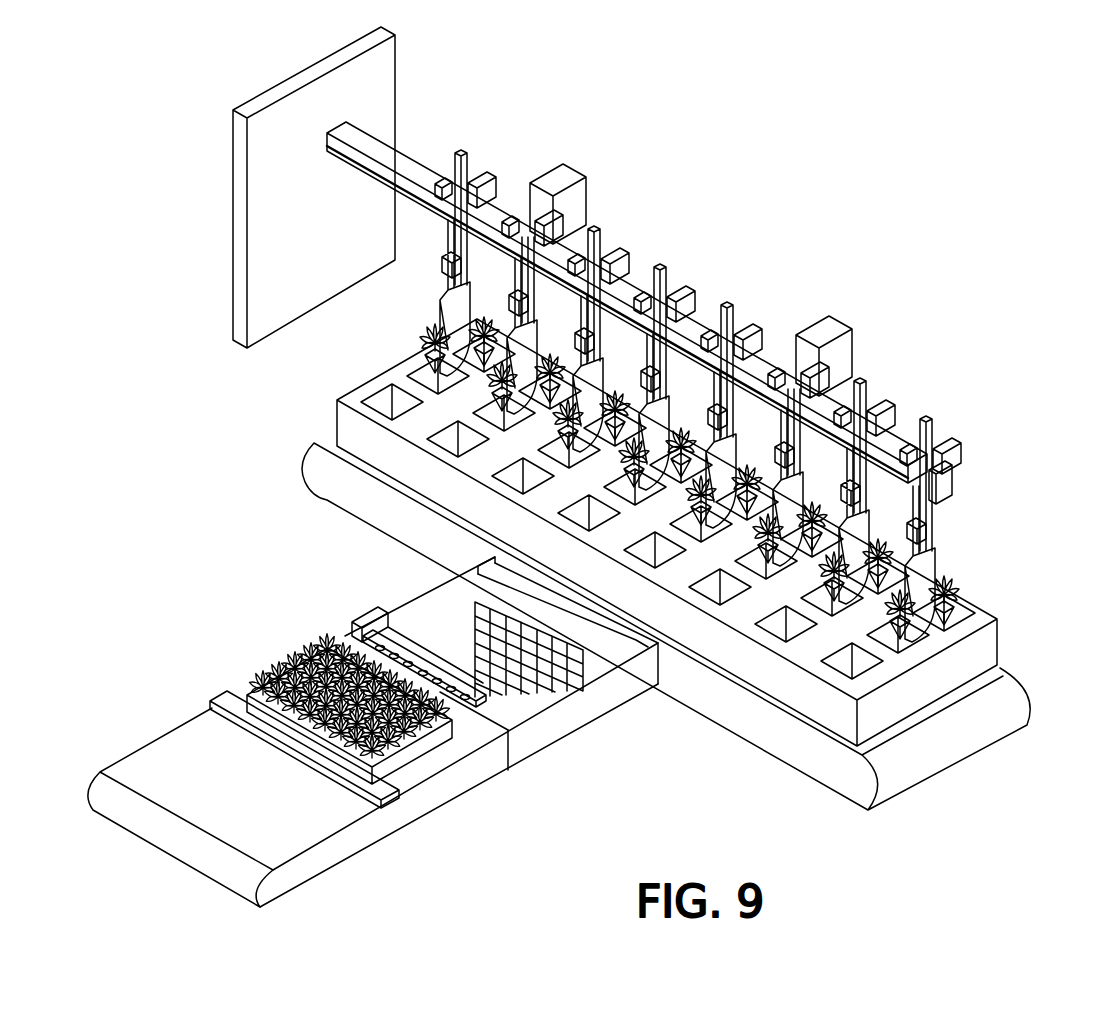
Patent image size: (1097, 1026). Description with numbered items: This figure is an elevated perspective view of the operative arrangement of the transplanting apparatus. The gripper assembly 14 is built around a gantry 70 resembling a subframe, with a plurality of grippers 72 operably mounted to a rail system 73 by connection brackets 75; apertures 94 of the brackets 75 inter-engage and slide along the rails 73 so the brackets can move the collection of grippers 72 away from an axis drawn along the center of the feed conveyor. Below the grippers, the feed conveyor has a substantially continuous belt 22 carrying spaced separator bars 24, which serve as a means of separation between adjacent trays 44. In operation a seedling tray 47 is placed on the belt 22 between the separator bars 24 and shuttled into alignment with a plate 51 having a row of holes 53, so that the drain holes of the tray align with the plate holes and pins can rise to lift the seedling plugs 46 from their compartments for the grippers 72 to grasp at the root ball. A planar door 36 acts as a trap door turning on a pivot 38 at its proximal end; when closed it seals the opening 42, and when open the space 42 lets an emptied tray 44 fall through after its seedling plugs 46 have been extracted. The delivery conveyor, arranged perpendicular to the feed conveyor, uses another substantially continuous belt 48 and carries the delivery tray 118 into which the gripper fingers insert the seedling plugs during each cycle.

The gripper assembly 14 is at (667, 253).
The belt 22 is at (160, 757).
The separator bars 24 is at (385, 793).
The door 36 is at (607, 650).
The pivot 38 is at (480, 578).
The opening 42 is at (440, 640).
The tray 44 is at (253, 690).
The seedling plugs 46 is at (440, 735).
The seedling tray 47 is at (415, 750).
The belt 48 is at (1015, 705).
The plate 51 is at (510, 720).
The holes 53 is at (418, 655).
The gantry 70 is at (385, 92).
The grippers 72 is at (730, 303).
The rail system 73 is at (402, 160).
The connection brackets 75 is at (882, 404).
The apertures 94 is at (948, 497).
The delivery tray 118 is at (985, 645).